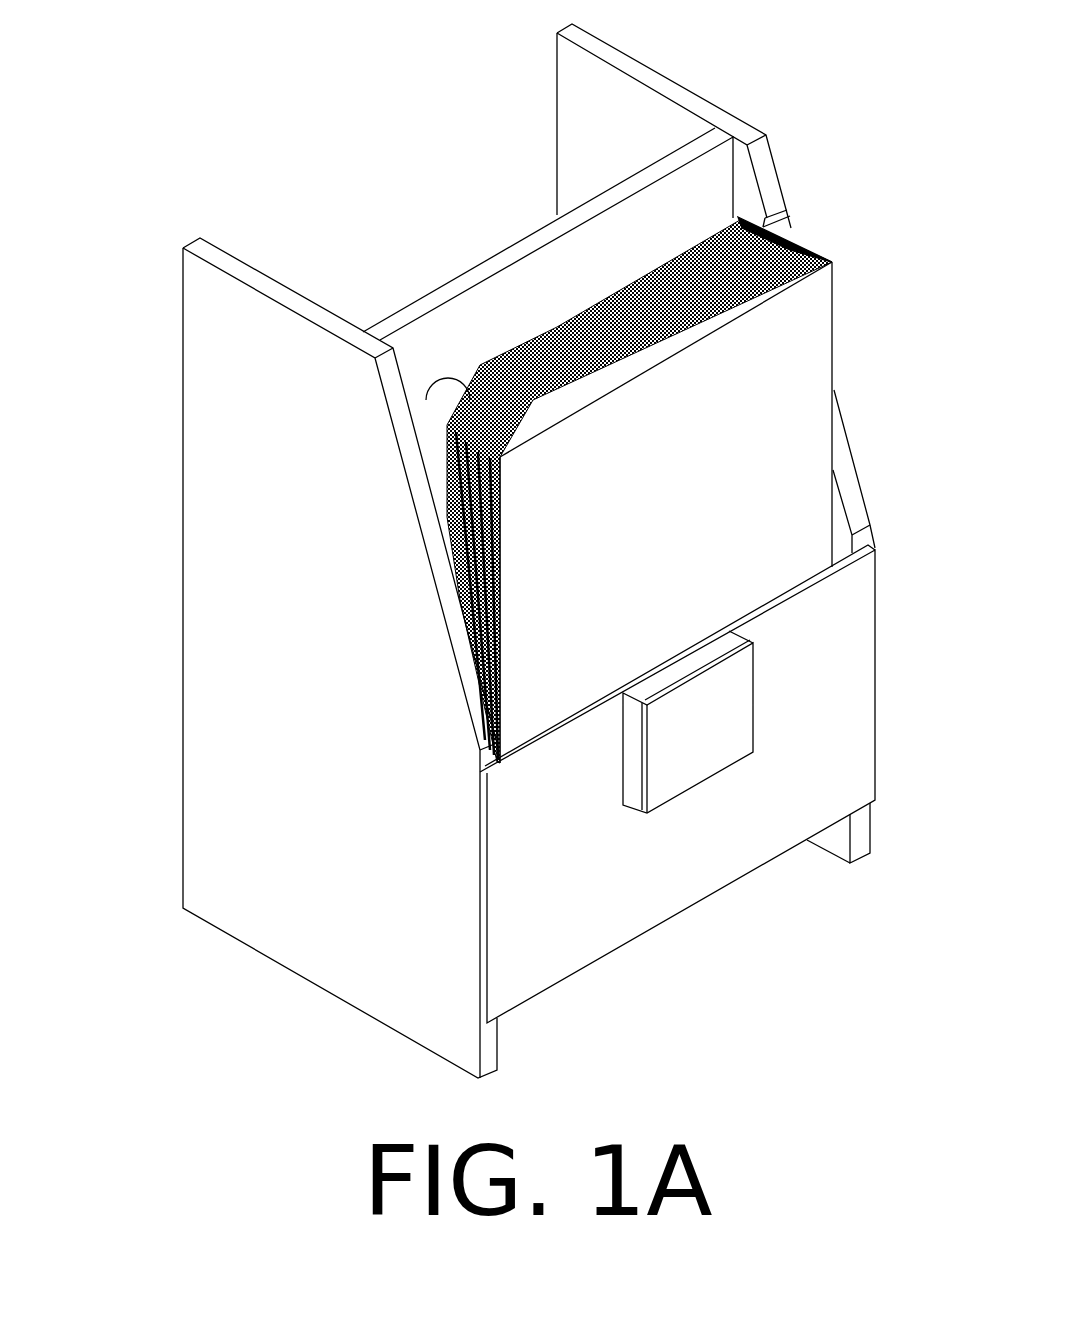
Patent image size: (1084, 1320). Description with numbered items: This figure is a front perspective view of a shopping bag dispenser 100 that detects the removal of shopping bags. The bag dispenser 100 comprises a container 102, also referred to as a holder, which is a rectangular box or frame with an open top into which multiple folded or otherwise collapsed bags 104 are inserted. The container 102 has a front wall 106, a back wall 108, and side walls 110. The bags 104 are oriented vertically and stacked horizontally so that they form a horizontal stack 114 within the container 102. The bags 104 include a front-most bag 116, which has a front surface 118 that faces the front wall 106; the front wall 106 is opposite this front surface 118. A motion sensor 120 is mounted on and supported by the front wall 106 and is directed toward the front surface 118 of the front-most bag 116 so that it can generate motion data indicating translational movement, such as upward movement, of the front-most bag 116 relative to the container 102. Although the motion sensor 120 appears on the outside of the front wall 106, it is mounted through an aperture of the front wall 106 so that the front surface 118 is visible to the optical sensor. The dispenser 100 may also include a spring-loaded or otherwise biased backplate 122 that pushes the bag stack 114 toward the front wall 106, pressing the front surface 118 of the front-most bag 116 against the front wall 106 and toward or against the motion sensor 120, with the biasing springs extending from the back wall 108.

The bag dispenser 100 is at (499, 551).
The container 102 is at (470, 551).
The bags 104 is at (679, 490).
The front wall 106 is at (677, 784).
The back wall 108 is at (462, 278).
The side walls 110 is at (633, 63).
The horizontal stack 114 is at (560, 312).
The front-most bag 116 is at (820, 308).
The front surface 118 is at (790, 352).
The motion sensor 120 is at (743, 700).
The backplate 122 is at (785, 223).